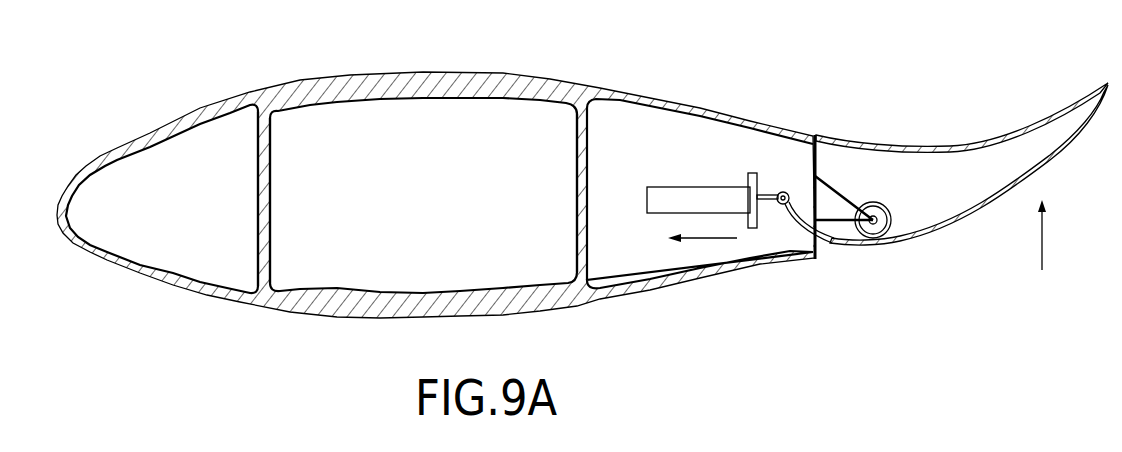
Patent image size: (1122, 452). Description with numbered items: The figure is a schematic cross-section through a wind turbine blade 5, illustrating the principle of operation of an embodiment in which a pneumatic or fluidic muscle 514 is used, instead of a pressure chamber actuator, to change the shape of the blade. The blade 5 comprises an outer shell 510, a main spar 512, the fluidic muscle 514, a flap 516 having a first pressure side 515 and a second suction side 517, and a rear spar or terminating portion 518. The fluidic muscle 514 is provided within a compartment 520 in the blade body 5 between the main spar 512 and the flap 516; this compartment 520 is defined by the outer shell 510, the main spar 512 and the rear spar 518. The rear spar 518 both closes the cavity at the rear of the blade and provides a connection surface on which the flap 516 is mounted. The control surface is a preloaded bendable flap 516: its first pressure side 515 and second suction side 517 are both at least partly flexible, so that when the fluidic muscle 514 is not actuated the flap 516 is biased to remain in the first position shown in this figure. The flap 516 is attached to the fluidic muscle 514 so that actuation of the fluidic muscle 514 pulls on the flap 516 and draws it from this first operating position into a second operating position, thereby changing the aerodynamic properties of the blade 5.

The blade 5 is at (436, 169).
The outer shell 510 is at (303, 80).
The main spar 512 is at (427, 83).
The compartment 520 is at (613, 120).
The pneumatic or fluidic muscle 514 is at (703, 187).
The rear spar 518 is at (812, 170).
The flap 516 is at (958, 154).
The second suction side 517 is at (1013, 130).
The first pressure side 515 is at (945, 230).